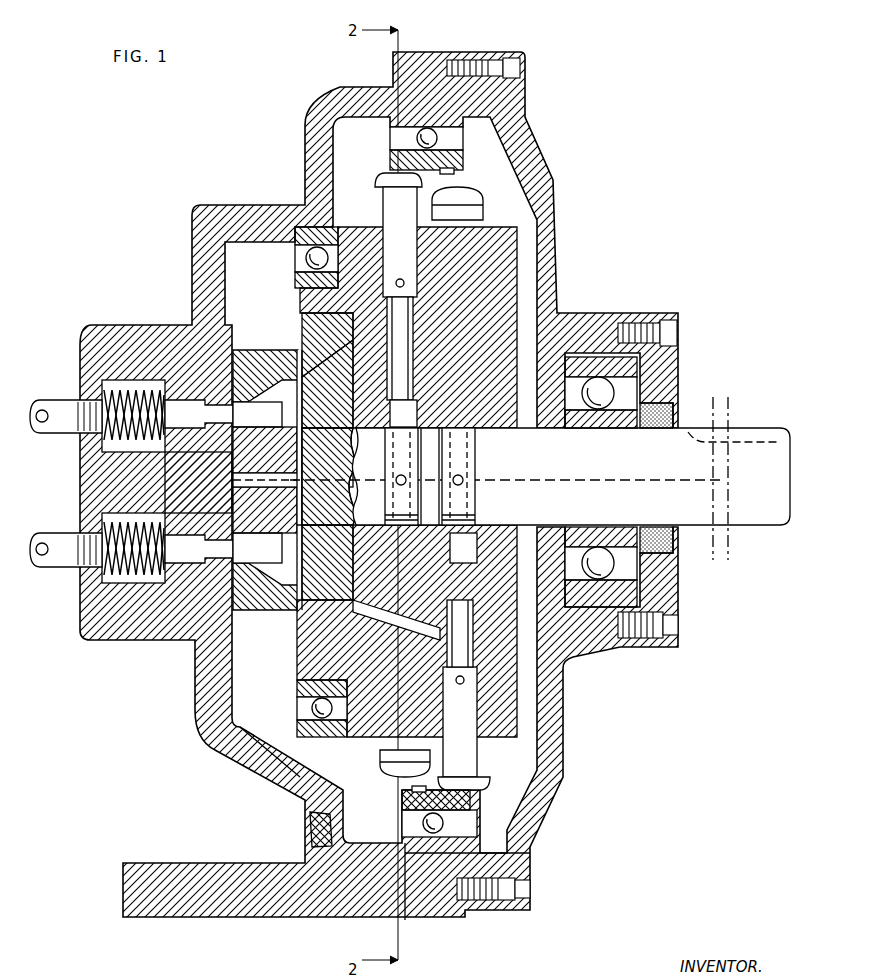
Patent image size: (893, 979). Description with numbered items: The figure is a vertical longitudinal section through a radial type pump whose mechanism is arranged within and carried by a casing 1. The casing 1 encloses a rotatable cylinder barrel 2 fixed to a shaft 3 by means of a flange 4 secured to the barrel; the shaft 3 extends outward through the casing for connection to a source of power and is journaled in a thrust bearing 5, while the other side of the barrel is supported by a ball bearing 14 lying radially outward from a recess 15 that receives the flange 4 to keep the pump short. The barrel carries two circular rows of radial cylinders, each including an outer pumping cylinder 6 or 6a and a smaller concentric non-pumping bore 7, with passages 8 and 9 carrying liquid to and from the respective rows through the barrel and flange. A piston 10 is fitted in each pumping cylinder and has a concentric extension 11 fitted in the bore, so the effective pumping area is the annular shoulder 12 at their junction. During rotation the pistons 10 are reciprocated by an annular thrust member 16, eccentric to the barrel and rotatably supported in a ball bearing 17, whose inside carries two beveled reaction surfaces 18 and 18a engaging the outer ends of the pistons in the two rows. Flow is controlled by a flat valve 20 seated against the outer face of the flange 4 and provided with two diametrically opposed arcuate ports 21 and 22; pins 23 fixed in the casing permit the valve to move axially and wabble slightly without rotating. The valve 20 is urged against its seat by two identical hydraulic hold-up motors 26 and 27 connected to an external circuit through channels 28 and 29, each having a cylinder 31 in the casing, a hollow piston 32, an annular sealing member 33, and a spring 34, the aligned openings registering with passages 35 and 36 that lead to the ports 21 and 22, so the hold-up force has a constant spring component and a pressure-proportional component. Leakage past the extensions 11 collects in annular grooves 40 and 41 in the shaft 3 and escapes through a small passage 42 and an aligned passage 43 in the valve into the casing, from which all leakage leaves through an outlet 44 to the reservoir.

The casing 1 is at (322, 131).
The cylinder barrel 2 is at (482, 379).
The shaft 3 is at (666, 477).
The flange 4 is at (332, 437).
The thrust bearing 5 is at (612, 425).
The pumping cylinder 6 is at (414, 324).
The pumping cylinder 6a is at (446, 656).
The non-pumping cylinder (bore) 7 is at (403, 408).
The passages 8 is at (327, 345).
The passages 9 is at (420, 618).
The piston 10 is at (394, 212).
The concentric extension 11 is at (410, 352).
The annular shoulder 12 is at (424, 482).
The ball bearing 14 is at (300, 258).
The recess 15 is at (372, 636).
The annular thrust member 16 is at (398, 160).
The ball bearing 17 is at (398, 133).
The beveled reaction surface 18 is at (416, 790).
The beveled reaction surface 18a is at (450, 176).
The flat valve 20 is at (276, 522).
The arcuate port 21 is at (265, 381).
The arcuate port 22 is at (265, 582).
The pins 23 is at (265, 450).
The hydraulic hold-up motor 26 is at (92, 386).
The hydraulic hold-up motor 27 is at (90, 584).
The channel 28 is at (73, 424).
The channel 29 is at (73, 557).
The cylinder 31 is at (112, 444).
The hollow piston 32 is at (182, 455).
The annular sealing member 33 is at (222, 380).
The spring 34 is at (125, 432).
The passage 35 is at (257, 414).
The passage 36 is at (259, 557).
The annular groove 40 is at (395, 513).
The annular groove 41 is at (472, 512).
The passage 42 is at (334, 482).
The passage 43 is at (293, 469).
The outlet 44 is at (310, 822).